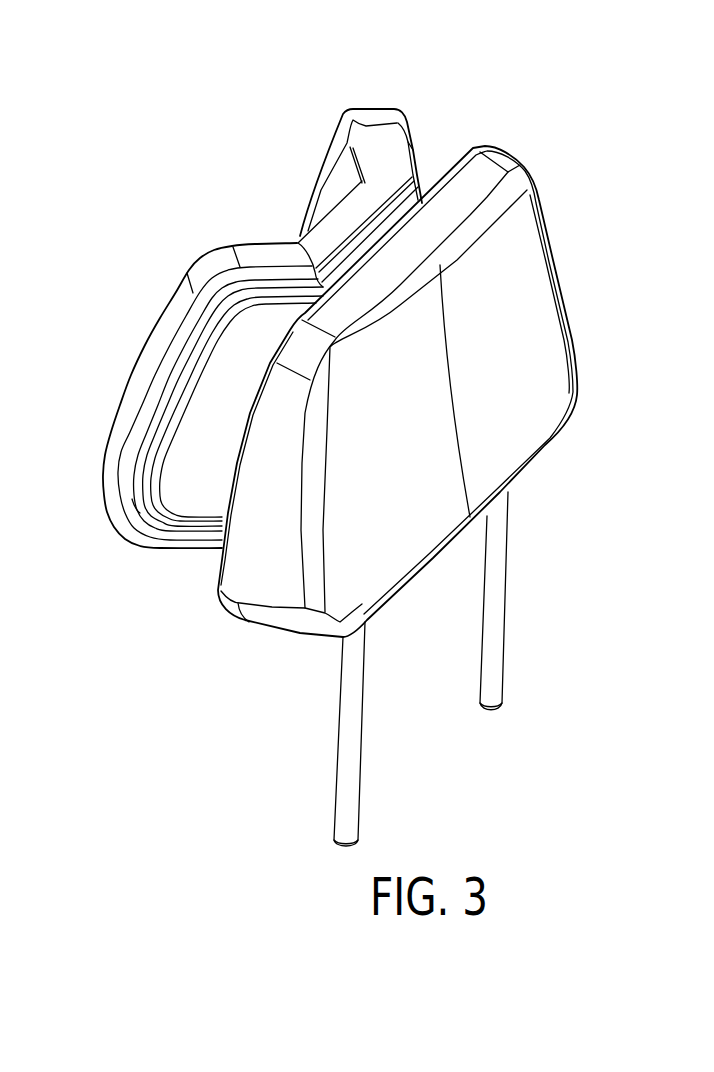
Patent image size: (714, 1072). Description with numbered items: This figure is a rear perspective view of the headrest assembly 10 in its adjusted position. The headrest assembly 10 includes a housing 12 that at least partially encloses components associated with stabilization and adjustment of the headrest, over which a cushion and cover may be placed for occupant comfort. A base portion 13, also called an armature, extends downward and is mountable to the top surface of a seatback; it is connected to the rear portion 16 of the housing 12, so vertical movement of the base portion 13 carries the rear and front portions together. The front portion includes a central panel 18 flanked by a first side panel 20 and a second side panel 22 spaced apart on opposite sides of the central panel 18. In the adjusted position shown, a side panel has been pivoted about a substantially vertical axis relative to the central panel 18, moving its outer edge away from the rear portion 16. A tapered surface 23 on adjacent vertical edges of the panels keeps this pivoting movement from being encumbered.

The headrest assembly 10 is at (95, 85).
The housing 12 is at (576, 404).
The base portion 13 is at (508, 640).
The rear portion 16 is at (517, 288).
The central panel 18 is at (345, 218).
The first side panel 20 is at (378, 132).
The second side panel 22 is at (157, 337).
The tapered surface 23 is at (416, 170).